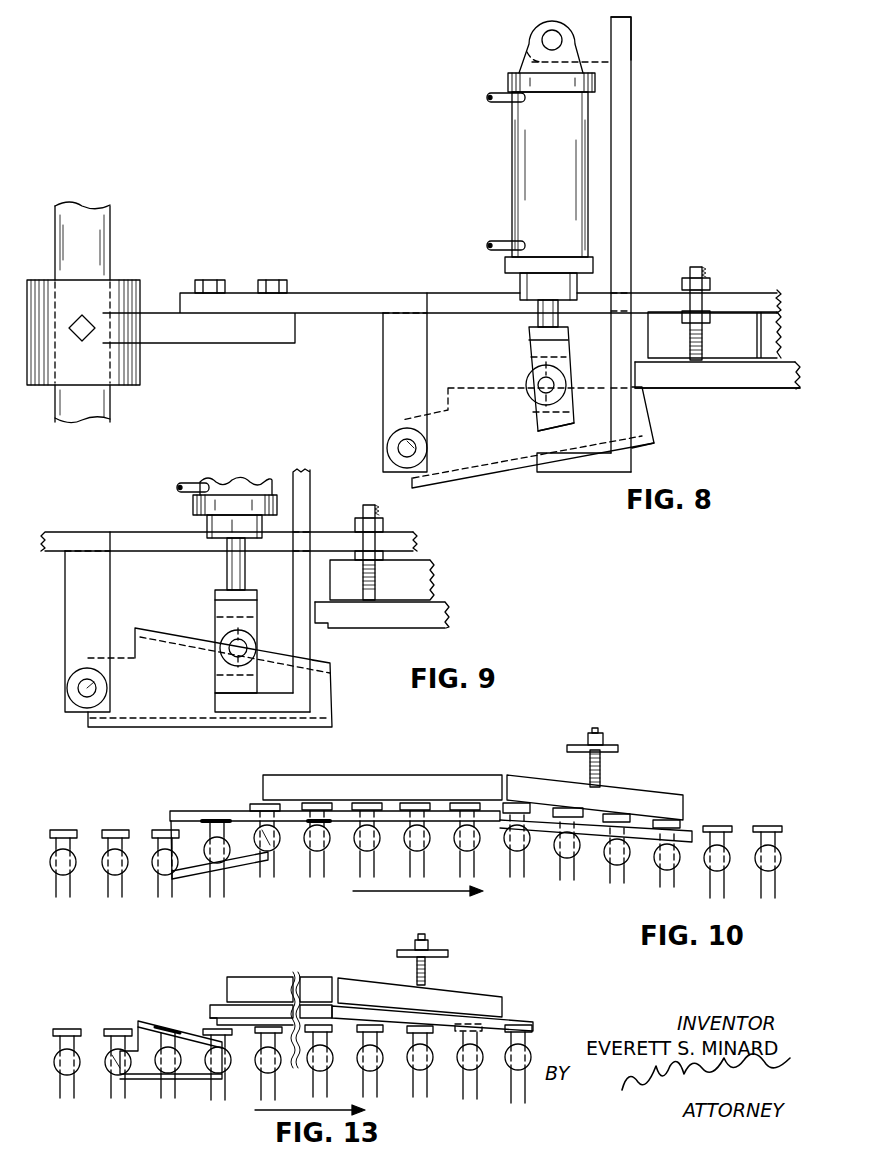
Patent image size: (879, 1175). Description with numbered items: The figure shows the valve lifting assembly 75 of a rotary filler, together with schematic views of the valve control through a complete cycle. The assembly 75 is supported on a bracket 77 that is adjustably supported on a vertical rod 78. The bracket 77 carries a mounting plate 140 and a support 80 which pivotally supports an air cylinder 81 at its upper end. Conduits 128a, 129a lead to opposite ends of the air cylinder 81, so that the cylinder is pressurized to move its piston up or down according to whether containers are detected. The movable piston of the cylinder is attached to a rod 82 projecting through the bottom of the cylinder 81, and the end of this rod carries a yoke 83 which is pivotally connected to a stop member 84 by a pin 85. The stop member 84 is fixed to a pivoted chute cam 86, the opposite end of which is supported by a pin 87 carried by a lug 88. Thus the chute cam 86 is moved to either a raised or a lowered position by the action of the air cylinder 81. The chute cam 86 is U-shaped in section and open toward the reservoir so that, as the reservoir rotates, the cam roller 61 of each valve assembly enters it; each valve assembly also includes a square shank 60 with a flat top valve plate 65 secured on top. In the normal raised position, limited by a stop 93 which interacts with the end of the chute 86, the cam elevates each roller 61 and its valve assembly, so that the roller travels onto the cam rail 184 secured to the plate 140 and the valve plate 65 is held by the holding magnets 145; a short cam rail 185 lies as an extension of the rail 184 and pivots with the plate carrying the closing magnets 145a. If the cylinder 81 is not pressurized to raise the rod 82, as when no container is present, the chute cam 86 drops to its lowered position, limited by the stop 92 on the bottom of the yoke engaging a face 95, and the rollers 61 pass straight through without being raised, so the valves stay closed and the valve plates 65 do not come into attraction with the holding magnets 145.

In FIG. 10, the square shank 60 is at (63, 886).
In FIG. 13, the square shank 60 is at (66, 1080).
In FIG. 10, the cam roller 61 is at (158, 866).
In FIG. 13, the cam roller 61 is at (108, 1065).
In FIG. 10, the flat top valve plate 65 is at (118, 830).
In FIG. 13, the flat top valve plate 65 is at (116, 1028).
In FIG. 8, the valve lifting assembly 75 is at (631, 92).
In FIG. 8, the bracket 77 is at (113, 288).
In FIG. 8, the vertical rod 78 is at (93, 203).
In FIG. 8, the support 80 is at (622, 150).
In FIG. 9, the support 80 is at (300, 476).
In FIG. 8, the air cylinder 81 is at (512, 142).
In FIG. 9, the air cylinder 81 is at (240, 487).
In FIG. 8, the rod 82 is at (538, 318).
In FIG. 9, the rod 82 is at (228, 556).
In FIG. 8, the yoke 83 is at (565, 367).
In FIG. 9, the yoke 83 is at (222, 622).
In FIG. 8, the stop member 84 is at (537, 418).
In FIG. 9, the stop member 84 is at (243, 684).
In FIG. 8, the pin 85 is at (539, 381).
In FIG. 9, the pin 85 is at (250, 646).
In FIG. 8, the chute cam 86 is at (645, 424).
In FIG. 9, the chute cam 86 is at (332, 712).
In FIG. 10, the chute cam 86 is at (245, 862).
In FIG. 13, the chute cam 86 is at (190, 1078).
In FIG. 8, the pin 87 is at (400, 440).
In FIG. 9, the pin 87 is at (80, 686).
In FIG. 8, the lug 88 is at (390, 350).
In FIG. 8, the stop 92 is at (560, 428).
In FIG. 8, the stop 93 is at (641, 387).
In FIG. 9, the stop 93 is at (320, 628).
In FIG. 10, the stop 93 is at (257, 814).
In FIG. 13, the stop 93 is at (210, 1020).
In FIG. 8, the face 95 is at (537, 456).
In FIG. 8, the conduit 128a is at (490, 95).
In FIG. 8, the conduit 129a is at (490, 243).
In FIG. 9, the conduit 129a is at (185, 482).
In FIG. 8, the mounting plate 140 is at (318, 298).
In FIG. 9, the mounting plate 140 is at (128, 540).
In FIG. 8, the holding magnets 145 is at (714, 313).
In FIG. 9, the holding magnets 145 is at (382, 552).
In FIG. 10, the holding magnets 145 is at (382, 787).
In FIG. 13, the holding magnets 145 is at (279, 989).
In FIG. 10, the closing magnets 145a is at (593, 778).
In FIG. 13, the closing magnets 145a is at (420, 975).
In FIG. 8, the cam rail 184 is at (717, 375).
In FIG. 9, the cam rail 184 is at (382, 615).
In FIG. 10, the cam rail 184 is at (345, 816).
In FIG. 13, the cam rail 184 is at (228, 1012).
In FIG. 10, the cam rail 185 is at (595, 828).
In FIG. 13, the cam rail 185 is at (440, 1028).